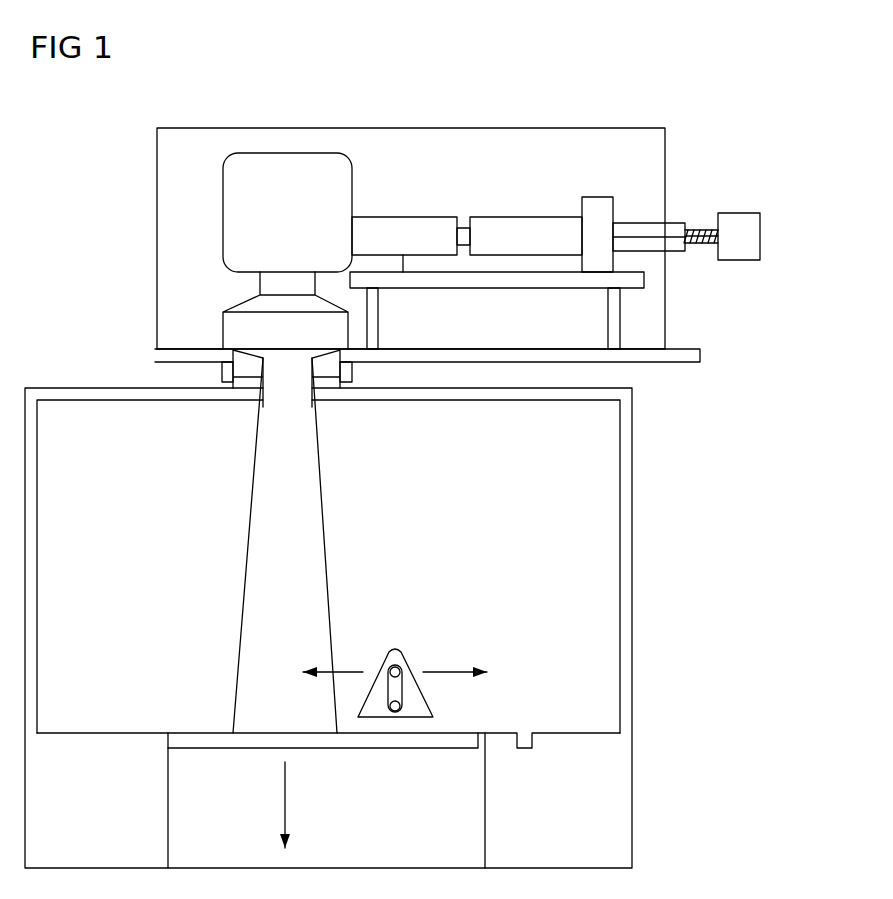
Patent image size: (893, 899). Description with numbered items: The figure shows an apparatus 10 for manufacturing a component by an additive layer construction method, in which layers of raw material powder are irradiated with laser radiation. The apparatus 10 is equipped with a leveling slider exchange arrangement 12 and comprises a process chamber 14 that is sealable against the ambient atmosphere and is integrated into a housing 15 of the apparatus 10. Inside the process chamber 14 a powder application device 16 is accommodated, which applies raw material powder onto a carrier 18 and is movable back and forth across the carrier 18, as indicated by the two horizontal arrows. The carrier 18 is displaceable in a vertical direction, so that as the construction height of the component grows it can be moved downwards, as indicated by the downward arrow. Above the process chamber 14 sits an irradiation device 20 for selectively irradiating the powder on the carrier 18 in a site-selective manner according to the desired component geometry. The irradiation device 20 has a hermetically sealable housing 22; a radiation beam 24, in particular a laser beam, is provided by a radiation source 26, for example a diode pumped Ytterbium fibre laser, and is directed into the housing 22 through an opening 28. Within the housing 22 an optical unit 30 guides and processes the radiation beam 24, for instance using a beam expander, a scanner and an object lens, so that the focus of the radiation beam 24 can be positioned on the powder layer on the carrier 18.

The apparatus 10 is at (398, 626).
The leveling slider exchange arrangement 12 is at (465, 697).
The process chamber 14 is at (633, 470).
The housing 15 is at (617, 800).
The powder application device 16 is at (396, 650).
The carrier 18 is at (480, 728).
The irradiation device 20 is at (458, 393).
The housing 22 is at (577, 128).
The radiation beam 24 is at (627, 237).
The radiation source 26 is at (738, 213).
The opening 28 is at (665, 222).
The optical unit 30 is at (482, 202).